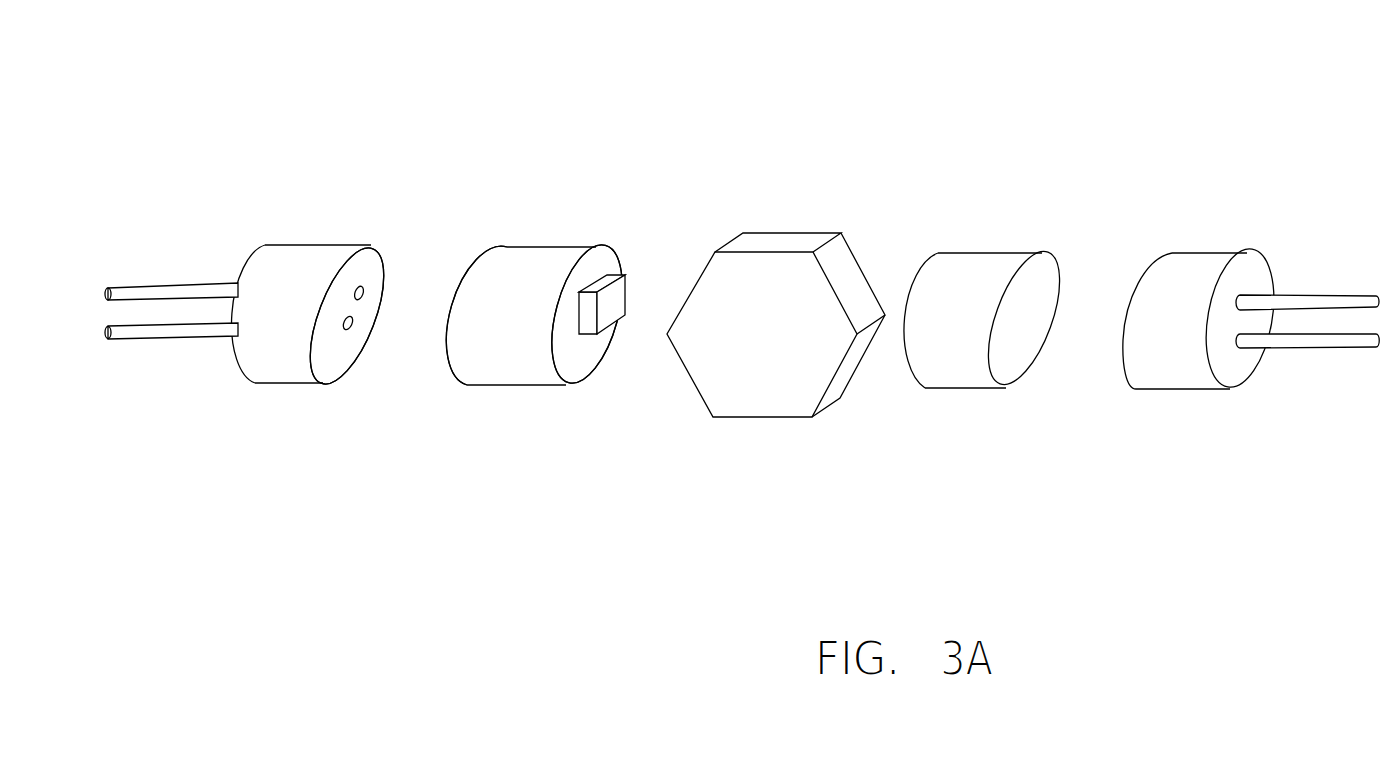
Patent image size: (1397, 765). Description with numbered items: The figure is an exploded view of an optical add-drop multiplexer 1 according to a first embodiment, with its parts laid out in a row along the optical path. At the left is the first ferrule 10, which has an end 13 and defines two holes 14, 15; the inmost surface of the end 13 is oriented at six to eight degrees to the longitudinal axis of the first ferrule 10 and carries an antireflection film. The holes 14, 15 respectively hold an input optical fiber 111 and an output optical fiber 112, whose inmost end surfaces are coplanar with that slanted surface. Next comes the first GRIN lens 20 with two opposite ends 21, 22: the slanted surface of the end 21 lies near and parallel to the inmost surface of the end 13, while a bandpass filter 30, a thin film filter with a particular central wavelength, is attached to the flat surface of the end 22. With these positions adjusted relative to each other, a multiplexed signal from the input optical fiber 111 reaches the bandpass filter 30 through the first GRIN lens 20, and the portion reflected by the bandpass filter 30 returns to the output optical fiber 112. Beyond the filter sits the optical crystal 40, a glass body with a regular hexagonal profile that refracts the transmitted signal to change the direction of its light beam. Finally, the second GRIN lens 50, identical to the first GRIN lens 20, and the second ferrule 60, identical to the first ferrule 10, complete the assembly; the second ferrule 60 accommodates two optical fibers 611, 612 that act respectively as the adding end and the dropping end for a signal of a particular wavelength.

The optical add-drop multiplexer 1 is at (137, 130).
The first ferrule 10 is at (300, 262).
The end 13 is at (378, 277).
The hole 14 is at (361, 298).
The hole 15 is at (346, 328).
The input optical fiber 111 is at (180, 290).
The output optical fiber 112 is at (170, 335).
The first graded index (GRIN) lens 20 is at (518, 360).
The end 21 is at (490, 260).
The end 22 is at (598, 263).
The bandpass filter 30 is at (615, 295).
The optical crystal 40 is at (778, 263).
The second GRIN lens 50 is at (968, 302).
The second ferrule 60 is at (1178, 277).
The optical fiber 611 is at (1328, 302).
The optical fiber 612 is at (1330, 342).